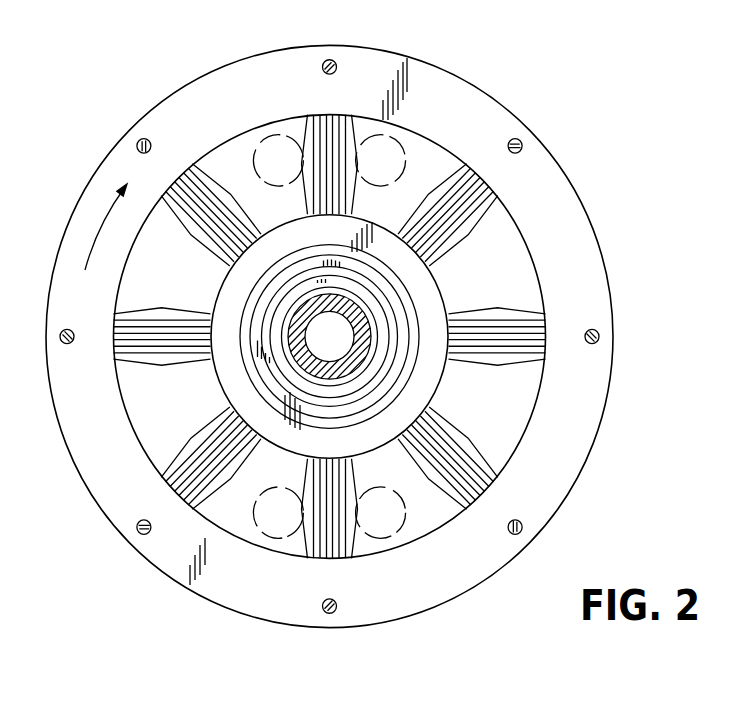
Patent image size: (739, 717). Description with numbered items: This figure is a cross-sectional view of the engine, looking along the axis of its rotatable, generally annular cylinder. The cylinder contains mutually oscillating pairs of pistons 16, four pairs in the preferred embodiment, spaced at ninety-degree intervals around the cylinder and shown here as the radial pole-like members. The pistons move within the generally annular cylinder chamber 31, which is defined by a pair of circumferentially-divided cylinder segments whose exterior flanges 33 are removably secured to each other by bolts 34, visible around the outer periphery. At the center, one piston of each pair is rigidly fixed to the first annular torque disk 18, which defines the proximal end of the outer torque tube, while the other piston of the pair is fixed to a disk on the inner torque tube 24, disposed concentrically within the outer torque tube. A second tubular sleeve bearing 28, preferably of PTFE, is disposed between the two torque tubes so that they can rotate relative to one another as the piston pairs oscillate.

The pistons 16 is at (193, 237).
The first annular torque disk 18 is at (425, 375).
The inner torque tube 24 is at (355, 357).
The second tubular sleeve bearing 28 is at (342, 399).
The annular cylinder chamber 31 is at (188, 293).
The exterior flange 33 is at (242, 87).
The bolts 34 is at (137, 140).